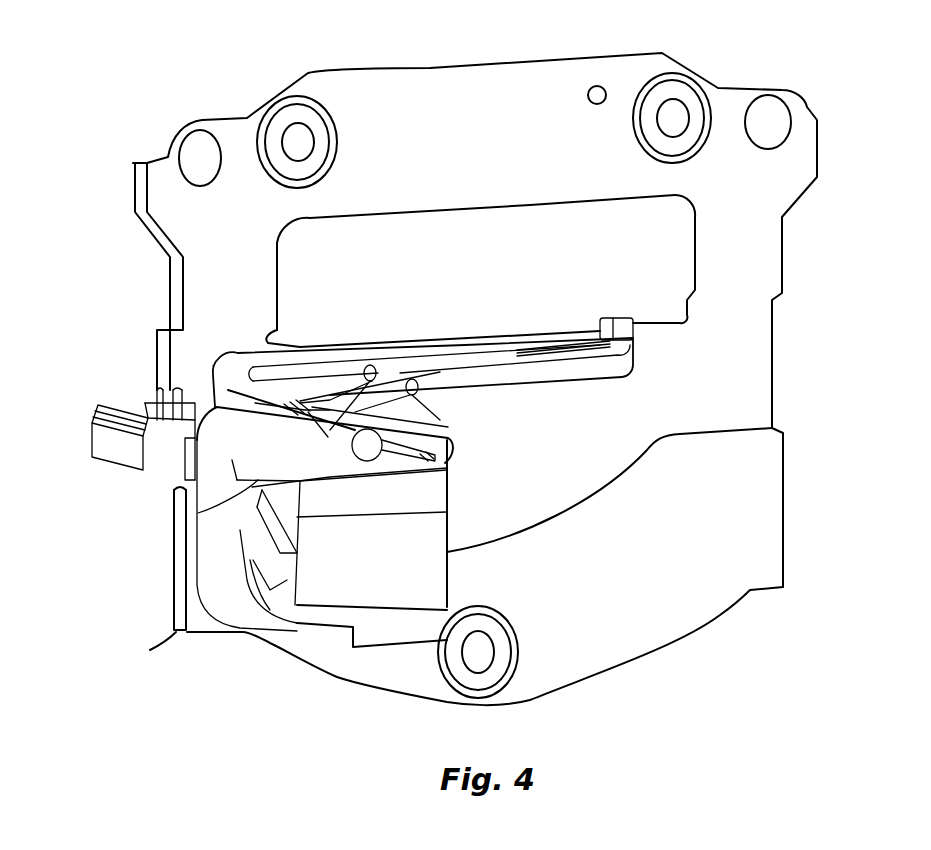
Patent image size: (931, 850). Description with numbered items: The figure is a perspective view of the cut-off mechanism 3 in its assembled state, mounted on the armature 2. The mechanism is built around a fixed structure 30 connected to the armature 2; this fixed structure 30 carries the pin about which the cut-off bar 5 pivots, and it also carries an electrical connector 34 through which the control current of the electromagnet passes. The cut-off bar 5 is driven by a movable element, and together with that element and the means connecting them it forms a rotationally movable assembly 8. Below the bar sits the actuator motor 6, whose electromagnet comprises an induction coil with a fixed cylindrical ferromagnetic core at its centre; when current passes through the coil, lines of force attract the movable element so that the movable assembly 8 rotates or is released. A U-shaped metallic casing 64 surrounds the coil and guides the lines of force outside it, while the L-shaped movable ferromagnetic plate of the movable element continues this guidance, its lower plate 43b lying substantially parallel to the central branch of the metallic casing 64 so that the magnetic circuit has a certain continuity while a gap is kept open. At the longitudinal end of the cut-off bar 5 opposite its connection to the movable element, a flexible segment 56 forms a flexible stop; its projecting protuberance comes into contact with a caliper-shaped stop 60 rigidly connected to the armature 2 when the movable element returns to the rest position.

The armature 2 is at (472, 86).
The cut-off bar 5 is at (440, 355).
The segment 56 is at (557, 332).
The stop 60 is at (613, 328).
The movable assembly 8 is at (213, 366).
The electrical connector 34 is at (105, 447).
The cut-off mechanism 3 is at (207, 452).
The fixed structure 30 is at (198, 515).
The lower plate 43b is at (447, 517).
The actuator motor 6 is at (373, 587).
The metallic casing 64 is at (223, 583).